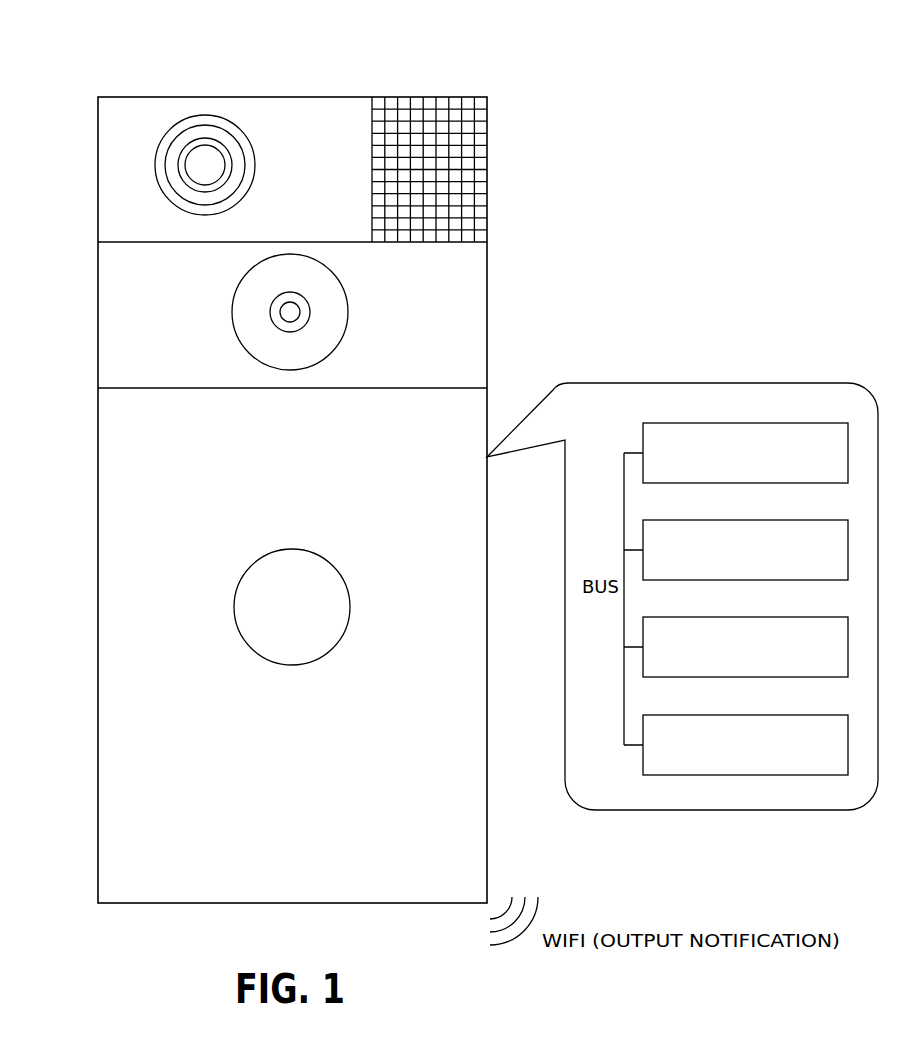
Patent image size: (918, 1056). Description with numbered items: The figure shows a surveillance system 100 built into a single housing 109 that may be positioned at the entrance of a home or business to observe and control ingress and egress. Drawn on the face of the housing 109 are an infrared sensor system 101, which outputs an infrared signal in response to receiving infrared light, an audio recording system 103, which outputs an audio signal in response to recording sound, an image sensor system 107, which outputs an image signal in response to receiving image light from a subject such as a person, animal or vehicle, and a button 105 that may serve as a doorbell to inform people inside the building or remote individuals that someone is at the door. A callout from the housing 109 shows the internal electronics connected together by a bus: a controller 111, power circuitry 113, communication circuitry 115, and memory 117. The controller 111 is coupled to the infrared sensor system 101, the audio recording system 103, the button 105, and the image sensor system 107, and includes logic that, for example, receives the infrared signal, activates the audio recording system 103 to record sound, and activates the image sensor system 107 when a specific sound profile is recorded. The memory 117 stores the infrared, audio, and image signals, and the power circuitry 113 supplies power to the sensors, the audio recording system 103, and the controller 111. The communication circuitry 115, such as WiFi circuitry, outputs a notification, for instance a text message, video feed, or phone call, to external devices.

The surveillance system 100 is at (310, 74).
The infrared sensor system 101 is at (180, 115).
The audio recording system 103 is at (455, 112).
The button 105 is at (317, 563).
The image sensor system 107 is at (300, 310).
The housing 109 is at (97, 423).
The controller 111 is at (828, 466).
The power circuitry 113 is at (800, 561).
The communication circuitry 115 is at (800, 659).
The memory 117 is at (806, 756).